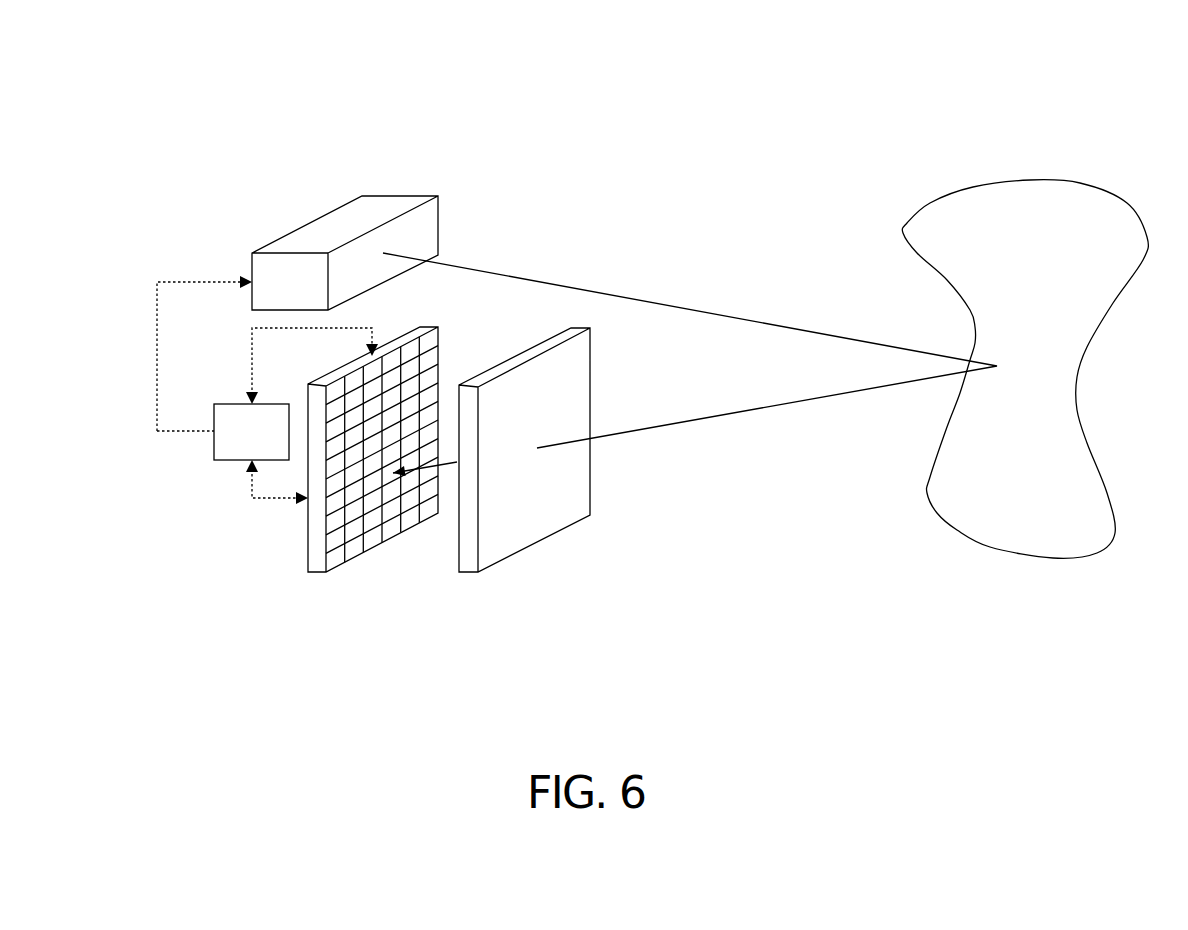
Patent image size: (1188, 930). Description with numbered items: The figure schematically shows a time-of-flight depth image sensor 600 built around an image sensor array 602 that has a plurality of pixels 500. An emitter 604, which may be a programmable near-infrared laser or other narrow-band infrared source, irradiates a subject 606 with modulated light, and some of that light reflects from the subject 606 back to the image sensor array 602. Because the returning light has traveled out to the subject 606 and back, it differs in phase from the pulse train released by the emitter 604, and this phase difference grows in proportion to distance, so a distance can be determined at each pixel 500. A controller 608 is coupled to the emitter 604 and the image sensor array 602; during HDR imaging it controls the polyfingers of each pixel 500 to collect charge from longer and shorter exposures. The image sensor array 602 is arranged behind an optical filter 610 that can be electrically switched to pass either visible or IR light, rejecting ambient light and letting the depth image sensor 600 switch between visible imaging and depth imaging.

The TOF depth image sensor 600 is at (545, 117).
The emitter 604 is at (308, 295).
The controller 608 is at (272, 446).
The image sensor array 602 is at (408, 568).
The pixels 500 is at (410, 350).
The optical filter 610 is at (590, 485).
The subject 606 is at (1045, 380).